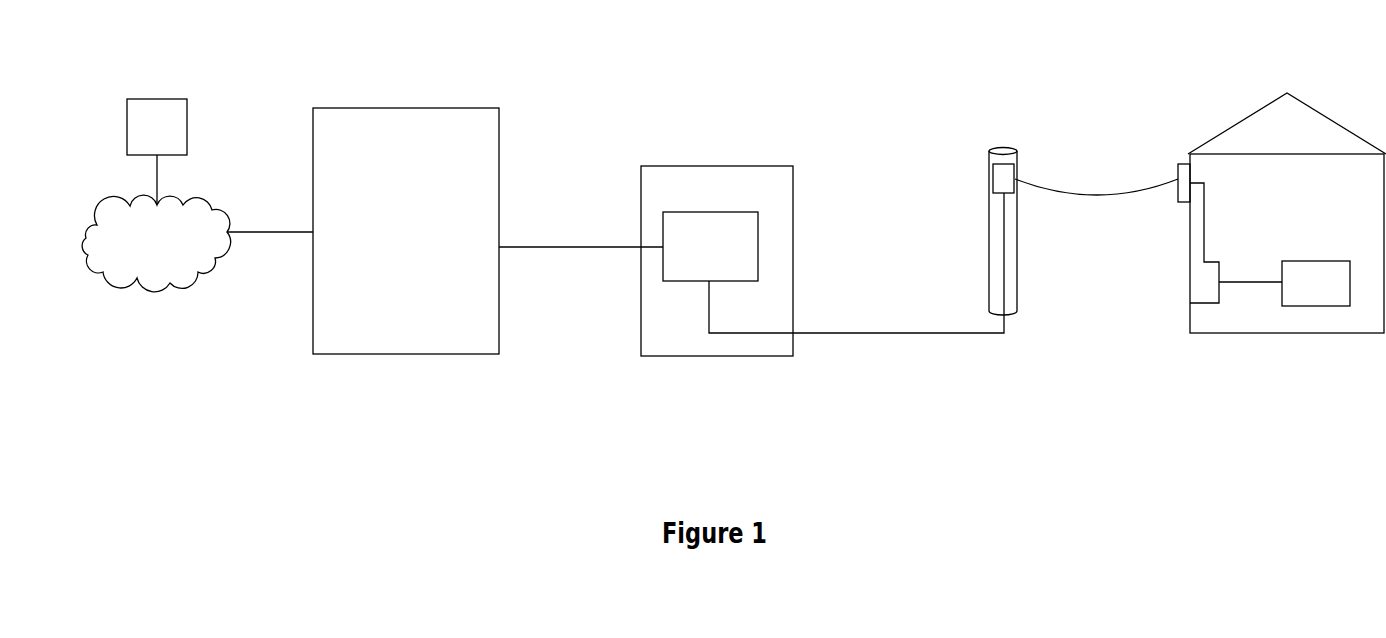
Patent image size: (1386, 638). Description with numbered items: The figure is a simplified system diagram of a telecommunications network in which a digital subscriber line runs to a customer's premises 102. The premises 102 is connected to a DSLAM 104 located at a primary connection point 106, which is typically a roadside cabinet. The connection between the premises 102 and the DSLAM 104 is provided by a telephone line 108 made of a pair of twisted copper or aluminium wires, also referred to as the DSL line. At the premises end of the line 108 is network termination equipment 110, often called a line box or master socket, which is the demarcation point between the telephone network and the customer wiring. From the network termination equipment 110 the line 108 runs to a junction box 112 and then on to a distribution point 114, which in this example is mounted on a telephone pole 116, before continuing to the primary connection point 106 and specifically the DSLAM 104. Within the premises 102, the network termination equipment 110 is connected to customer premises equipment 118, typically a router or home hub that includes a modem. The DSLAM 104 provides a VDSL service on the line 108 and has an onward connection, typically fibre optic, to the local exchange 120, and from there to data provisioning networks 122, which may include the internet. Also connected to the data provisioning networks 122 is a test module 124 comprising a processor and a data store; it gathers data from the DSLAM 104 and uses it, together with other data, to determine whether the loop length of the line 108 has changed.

The customer premises 102 is at (1265, 104).
The DSLAM 104 is at (698, 208).
The primary connection point 106 is at (709, 158).
The telephone line 108 is at (901, 325).
The network termination equipment 110 is at (1186, 276).
The junction box 112 is at (1178, 164).
The distribution point 114 is at (995, 183).
The telephone pole 116 is at (986, 244).
The customer premises equipment 118 is at (1300, 258).
The local exchange 120 is at (508, 335).
The data provisioning networks 122 is at (203, 191).
The test module 124 is at (162, 93).